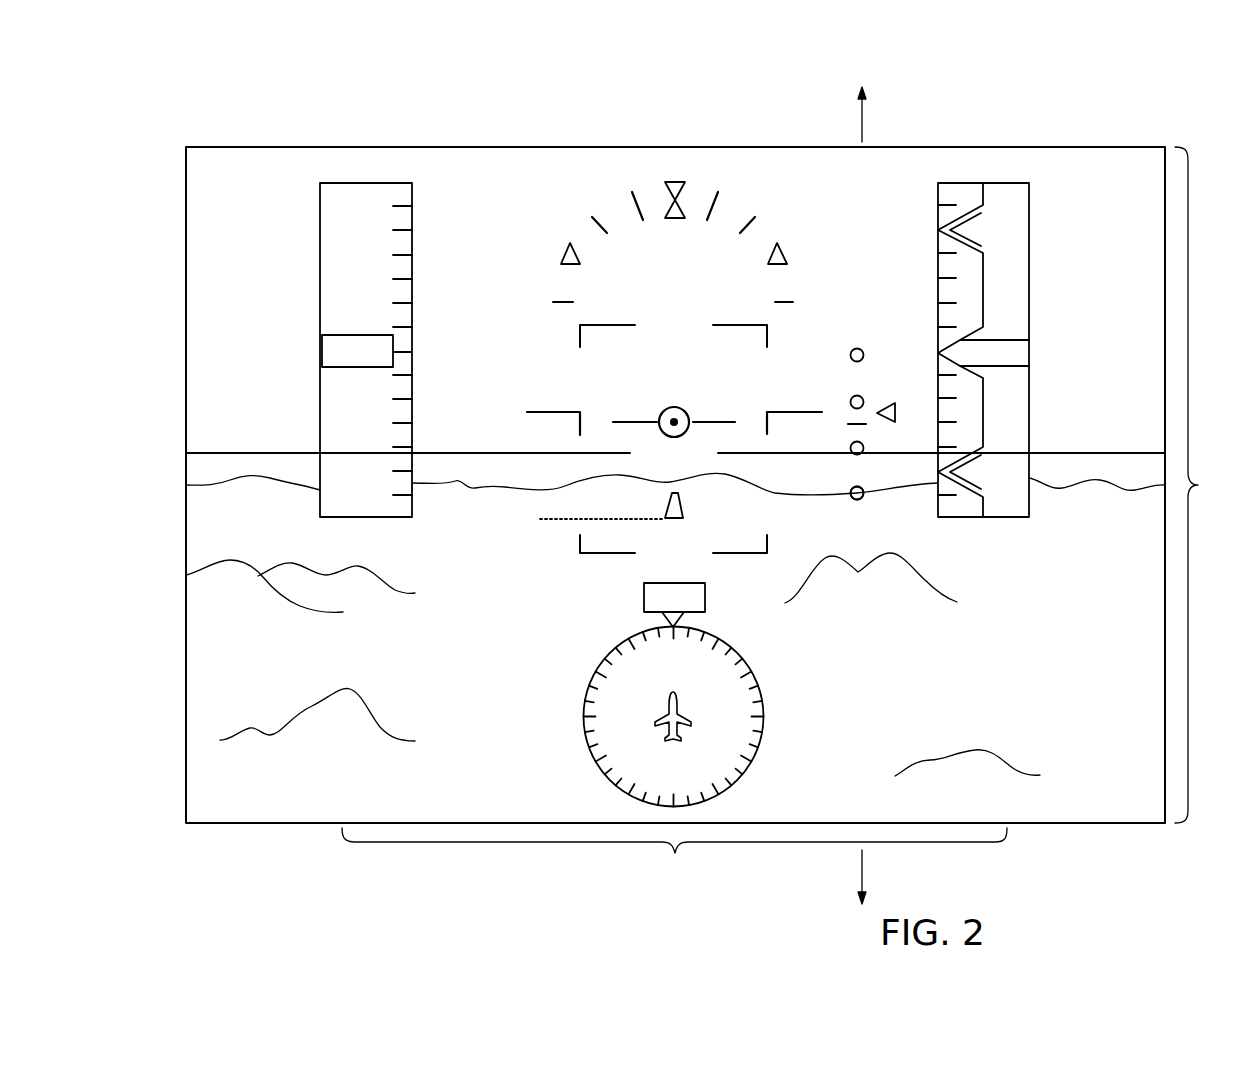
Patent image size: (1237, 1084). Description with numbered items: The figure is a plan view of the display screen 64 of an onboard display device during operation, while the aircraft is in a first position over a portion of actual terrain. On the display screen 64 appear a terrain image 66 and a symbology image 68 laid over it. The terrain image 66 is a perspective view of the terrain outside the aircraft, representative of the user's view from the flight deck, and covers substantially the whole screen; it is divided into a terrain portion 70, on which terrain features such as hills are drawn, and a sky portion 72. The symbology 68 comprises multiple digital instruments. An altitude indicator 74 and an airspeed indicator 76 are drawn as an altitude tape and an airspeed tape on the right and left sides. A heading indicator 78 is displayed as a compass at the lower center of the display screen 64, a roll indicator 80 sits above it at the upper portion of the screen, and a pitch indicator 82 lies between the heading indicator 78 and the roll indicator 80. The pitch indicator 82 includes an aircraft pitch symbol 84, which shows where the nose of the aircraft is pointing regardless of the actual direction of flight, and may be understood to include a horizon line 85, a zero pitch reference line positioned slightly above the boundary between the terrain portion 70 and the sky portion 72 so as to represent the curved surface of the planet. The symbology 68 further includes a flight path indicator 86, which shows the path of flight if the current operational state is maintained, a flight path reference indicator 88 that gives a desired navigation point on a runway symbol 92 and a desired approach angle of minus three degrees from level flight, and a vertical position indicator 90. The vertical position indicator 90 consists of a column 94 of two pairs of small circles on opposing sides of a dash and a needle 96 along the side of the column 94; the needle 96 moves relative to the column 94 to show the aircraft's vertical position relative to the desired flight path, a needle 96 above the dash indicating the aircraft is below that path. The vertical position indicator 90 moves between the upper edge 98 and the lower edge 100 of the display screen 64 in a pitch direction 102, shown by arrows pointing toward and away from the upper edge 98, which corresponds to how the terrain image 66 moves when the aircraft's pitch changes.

The display screen 64 is at (268, 147).
The terrain image 66 is at (1206, 485).
The symbology image 68 is at (674, 857).
The terrain portion 70 is at (675, 624).
The sky portion 72 is at (845, 249).
The altitude indicator 74 is at (938, 248).
The airspeed indicator 76 is at (412, 250).
The heading indicator 78 is at (591, 680).
The roll indicator 80 is at (592, 233).
The pitch indicator 82 is at (580, 377).
The aircraft pitch symbol 84 is at (572, 414).
The horizon line 85 is at (1113, 452).
The flight path indicator 86 is at (672, 405).
The flight path reference indicator 88 is at (560, 519).
The vertical position indicator 90 is at (885, 350).
The runway symbol 92 is at (683, 500).
The column 94 is at (857, 500).
The needle 96 is at (892, 403).
The upper edge 98 is at (1080, 147).
The lower edge 100 is at (1080, 823).
The pitch direction 102 is at (862, 122).